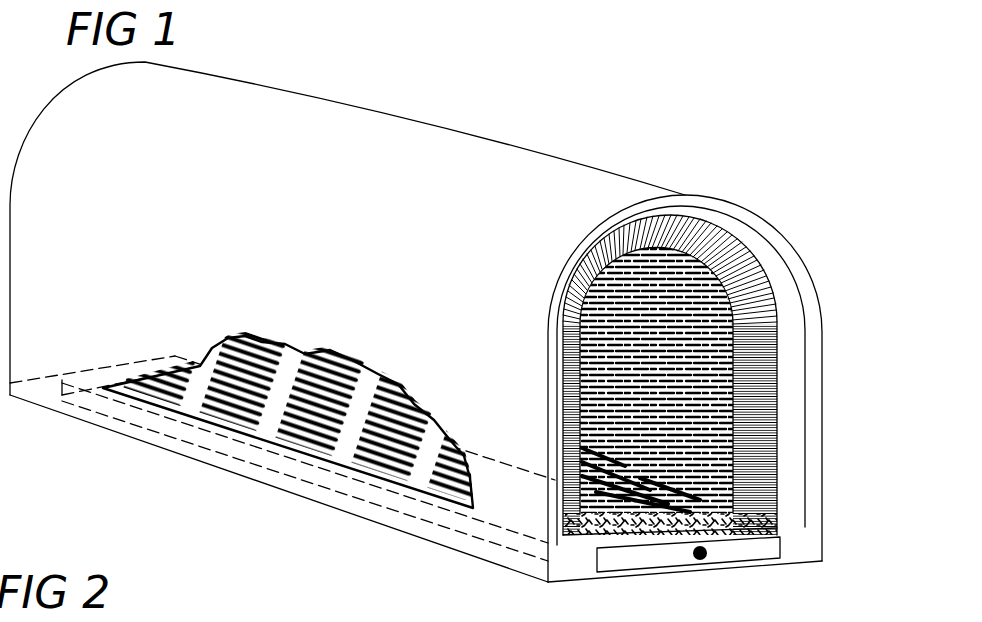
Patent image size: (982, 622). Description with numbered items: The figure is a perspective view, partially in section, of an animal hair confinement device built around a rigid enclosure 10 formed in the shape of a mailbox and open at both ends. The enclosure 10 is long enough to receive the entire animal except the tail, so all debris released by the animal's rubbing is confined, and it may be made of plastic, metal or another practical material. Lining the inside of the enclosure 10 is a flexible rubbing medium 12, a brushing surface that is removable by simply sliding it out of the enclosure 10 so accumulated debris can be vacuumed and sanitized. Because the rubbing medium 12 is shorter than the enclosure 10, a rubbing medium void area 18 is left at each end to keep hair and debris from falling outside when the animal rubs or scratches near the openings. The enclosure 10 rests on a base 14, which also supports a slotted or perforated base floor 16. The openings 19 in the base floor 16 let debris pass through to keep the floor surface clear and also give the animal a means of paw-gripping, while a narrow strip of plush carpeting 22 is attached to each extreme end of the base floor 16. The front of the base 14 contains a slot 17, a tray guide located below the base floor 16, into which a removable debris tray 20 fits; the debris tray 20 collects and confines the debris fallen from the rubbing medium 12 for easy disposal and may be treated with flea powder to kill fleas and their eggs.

The rigid enclosure 10 is at (722, 173).
The flexible rubbing medium 12 is at (772, 410).
The base 14 is at (793, 545).
The perforated base floor 16 is at (250, 423).
The slot 17 is at (565, 572).
The rubbing medium void area 18 is at (783, 352).
The slotted or perforated openings 19 is at (320, 435).
The debris tray 20 is at (640, 553).
The strip of plush carpeting 22 is at (600, 533).